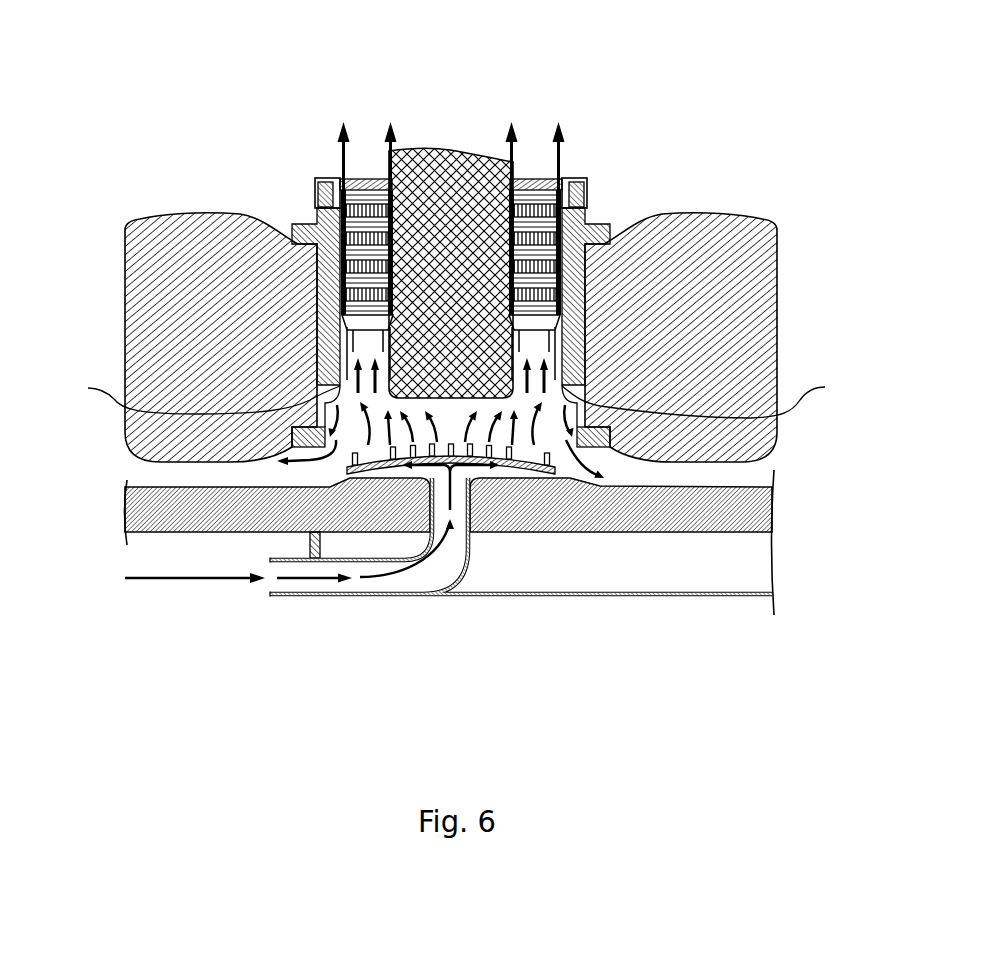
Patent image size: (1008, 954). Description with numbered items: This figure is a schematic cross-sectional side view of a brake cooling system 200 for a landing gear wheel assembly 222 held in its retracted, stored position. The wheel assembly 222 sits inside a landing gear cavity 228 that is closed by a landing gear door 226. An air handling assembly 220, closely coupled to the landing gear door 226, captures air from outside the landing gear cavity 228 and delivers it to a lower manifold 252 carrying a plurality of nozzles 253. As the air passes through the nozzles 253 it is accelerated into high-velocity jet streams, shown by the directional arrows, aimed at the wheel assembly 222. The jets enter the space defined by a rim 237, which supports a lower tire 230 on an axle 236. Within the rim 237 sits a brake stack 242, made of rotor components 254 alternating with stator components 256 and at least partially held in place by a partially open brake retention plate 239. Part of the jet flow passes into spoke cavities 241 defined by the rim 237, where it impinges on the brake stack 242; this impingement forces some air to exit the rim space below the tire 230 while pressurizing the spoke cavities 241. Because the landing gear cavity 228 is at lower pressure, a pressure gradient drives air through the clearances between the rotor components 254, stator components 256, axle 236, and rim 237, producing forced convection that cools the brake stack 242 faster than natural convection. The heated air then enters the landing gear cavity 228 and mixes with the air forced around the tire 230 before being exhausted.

The brake cooling system 200 is at (256, 644).
The air handling assembly 220 is at (427, 600).
The wheel assembly 222 is at (753, 212).
The landing gear door 226 is at (771, 482).
The landing gear cavity 228 is at (460, 19).
The lower tire 230 is at (777, 323).
The axle 236 is at (434, 152).
The rim 237 is at (617, 460).
The brake retention plate 239 is at (328, 178).
The spoke cavities 241 is at (457, 397).
The brake stack 242 is at (532, 178).
The lower manifold 252 is at (362, 178).
The nozzles 253 is at (330, 460).
The rotor components 254 is at (586, 190).
The stator components 256 is at (587, 206).